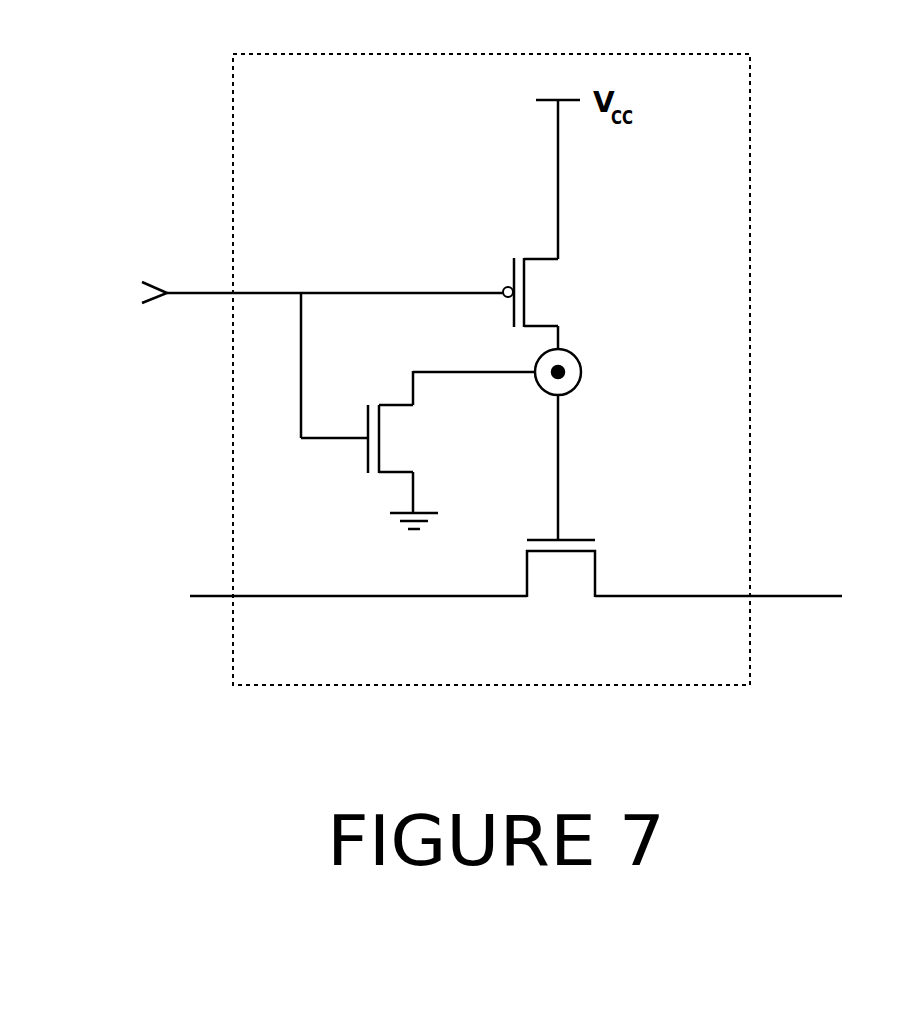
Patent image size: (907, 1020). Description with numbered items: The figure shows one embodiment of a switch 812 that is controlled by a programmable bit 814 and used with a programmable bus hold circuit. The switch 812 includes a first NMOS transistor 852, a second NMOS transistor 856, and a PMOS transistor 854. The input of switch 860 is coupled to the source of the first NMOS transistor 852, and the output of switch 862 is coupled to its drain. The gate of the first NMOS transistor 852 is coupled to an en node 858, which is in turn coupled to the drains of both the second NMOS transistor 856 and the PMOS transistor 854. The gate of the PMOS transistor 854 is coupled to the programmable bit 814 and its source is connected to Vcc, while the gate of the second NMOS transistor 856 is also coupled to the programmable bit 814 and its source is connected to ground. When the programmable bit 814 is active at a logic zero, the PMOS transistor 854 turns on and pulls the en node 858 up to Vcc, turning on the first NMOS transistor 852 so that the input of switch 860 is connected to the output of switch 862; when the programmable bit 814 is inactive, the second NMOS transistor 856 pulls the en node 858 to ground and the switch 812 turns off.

The switch 812 is at (523, 369).
The programmable bit 814 is at (293, 309).
The first NMOS transistor 852 is at (538, 526).
The PMOS transistor 854 is at (551, 303).
The second NMOS transistor 856 is at (378, 411).
The en node 858 is at (524, 388).
The input of switch 860 is at (797, 596).
The output of switch 862 is at (213, 596).